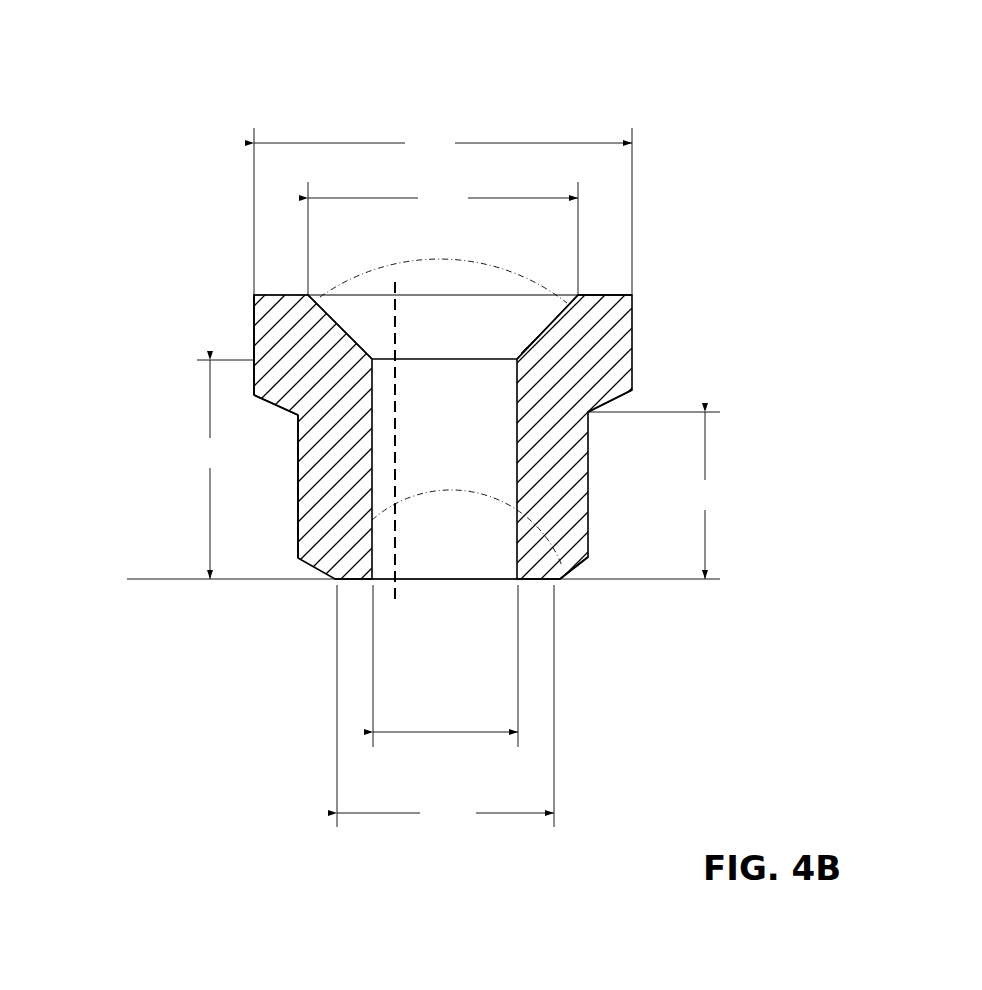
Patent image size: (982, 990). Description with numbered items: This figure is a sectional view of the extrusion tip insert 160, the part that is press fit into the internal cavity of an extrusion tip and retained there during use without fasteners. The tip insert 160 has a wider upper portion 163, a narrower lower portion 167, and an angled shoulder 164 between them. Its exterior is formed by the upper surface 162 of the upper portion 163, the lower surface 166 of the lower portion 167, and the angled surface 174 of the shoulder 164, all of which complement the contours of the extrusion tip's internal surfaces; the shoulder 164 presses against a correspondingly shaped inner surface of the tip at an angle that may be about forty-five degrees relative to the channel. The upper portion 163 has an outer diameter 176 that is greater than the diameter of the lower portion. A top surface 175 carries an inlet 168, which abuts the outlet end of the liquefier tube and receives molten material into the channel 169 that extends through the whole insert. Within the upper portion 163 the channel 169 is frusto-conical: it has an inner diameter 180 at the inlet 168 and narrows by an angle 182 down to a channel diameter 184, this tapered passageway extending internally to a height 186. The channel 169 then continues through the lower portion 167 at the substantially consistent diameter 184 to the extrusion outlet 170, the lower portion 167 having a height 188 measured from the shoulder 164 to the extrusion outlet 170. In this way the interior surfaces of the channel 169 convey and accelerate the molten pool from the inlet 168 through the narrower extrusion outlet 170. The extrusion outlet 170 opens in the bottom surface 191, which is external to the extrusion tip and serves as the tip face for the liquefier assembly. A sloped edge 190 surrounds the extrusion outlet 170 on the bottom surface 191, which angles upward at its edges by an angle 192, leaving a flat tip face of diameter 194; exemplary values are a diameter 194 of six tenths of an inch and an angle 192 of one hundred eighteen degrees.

The tip insert 160 is at (123, 85).
The upper surface 162 is at (253, 337).
The upper portion 163 is at (118, 342).
The angled shoulder 164 is at (632, 403).
The lower surface 166 is at (298, 530).
The lower portion 167 is at (115, 478).
The inlet 168 is at (517, 288).
The channel 169 is at (375, 320).
The extrusion outlet 170 is at (485, 585).
The angled surface 174 is at (288, 410).
The top surface 175 is at (610, 293).
The outer diameter 176 is at (443, 211).
The inner diameter 180 is at (443, 238).
The angle 182 is at (443, 269).
The channel diameter 184 is at (445, 674).
The height 186 is at (225, 469).
The height 188 is at (659, 495).
The sloped edge 190 is at (592, 583).
The bottom surface 191 is at (404, 582).
The angle 192 is at (467, 526).
The diameter 194 is at (445, 706).